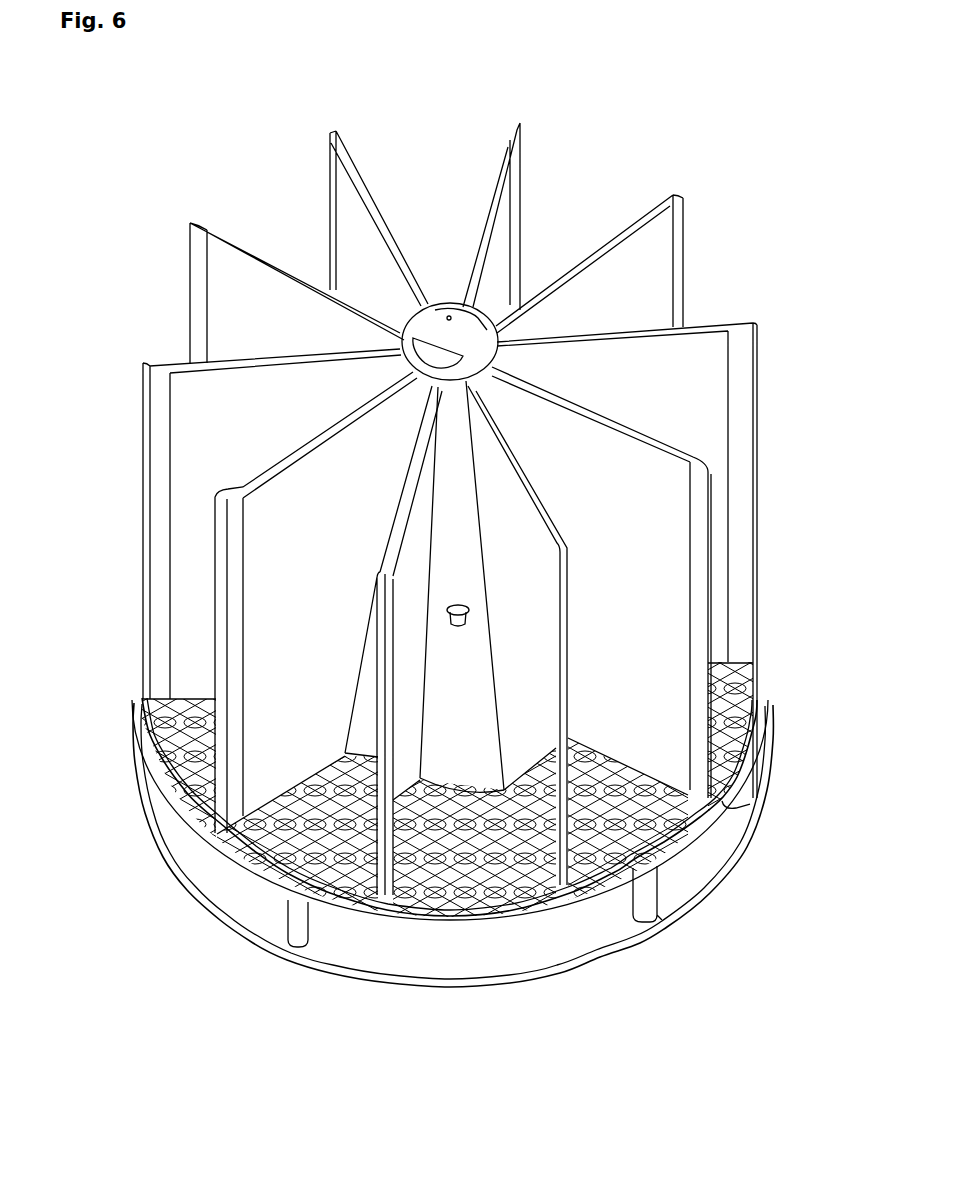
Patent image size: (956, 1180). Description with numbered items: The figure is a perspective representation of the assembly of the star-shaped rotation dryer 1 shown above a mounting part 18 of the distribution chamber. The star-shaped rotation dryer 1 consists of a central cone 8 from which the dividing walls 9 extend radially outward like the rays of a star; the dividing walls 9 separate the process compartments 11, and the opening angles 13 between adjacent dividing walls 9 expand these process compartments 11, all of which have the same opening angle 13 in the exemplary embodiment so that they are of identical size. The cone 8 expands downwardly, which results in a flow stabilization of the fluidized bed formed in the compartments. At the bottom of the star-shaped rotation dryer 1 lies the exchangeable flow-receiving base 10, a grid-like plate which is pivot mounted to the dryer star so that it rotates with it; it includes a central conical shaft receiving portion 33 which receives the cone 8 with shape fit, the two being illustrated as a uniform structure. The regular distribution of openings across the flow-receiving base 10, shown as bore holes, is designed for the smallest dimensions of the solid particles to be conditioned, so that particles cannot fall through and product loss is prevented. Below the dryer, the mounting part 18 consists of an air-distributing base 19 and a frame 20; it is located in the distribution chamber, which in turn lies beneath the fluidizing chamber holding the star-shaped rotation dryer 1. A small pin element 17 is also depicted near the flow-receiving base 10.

The star-shaped rotation dryer 1 is at (143, 78).
The cone 8 is at (468, 357).
The dividing walls 9 is at (697, 328).
The flow-receiving base 10 is at (327, 857).
The process compartments 11 is at (176, 471).
The opening angles 13 is at (488, 174).
The fastening pin 17 is at (461, 627).
The mounting part 18 is at (142, 870).
The air-distributing base 19 is at (623, 777).
The frame 20 is at (607, 953).
The central conical shaft receiving portion 33 is at (485, 784).